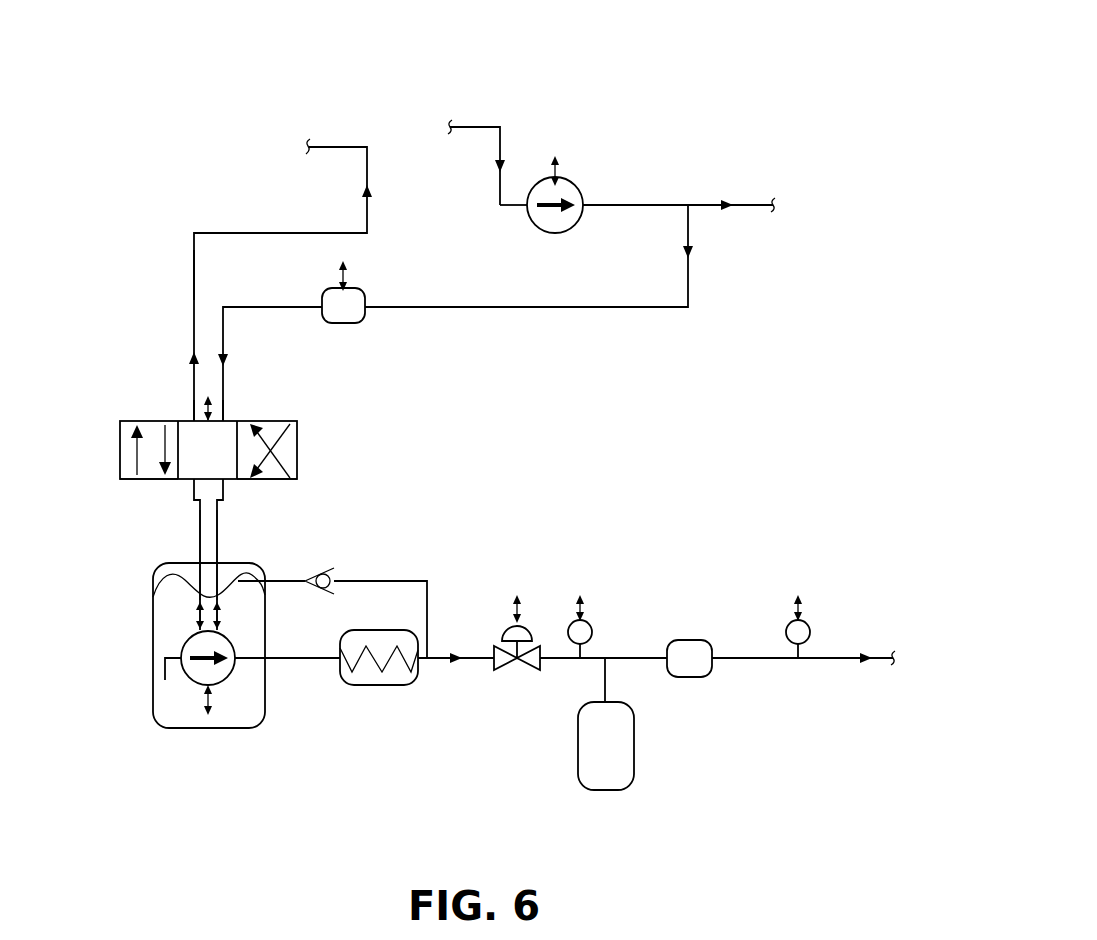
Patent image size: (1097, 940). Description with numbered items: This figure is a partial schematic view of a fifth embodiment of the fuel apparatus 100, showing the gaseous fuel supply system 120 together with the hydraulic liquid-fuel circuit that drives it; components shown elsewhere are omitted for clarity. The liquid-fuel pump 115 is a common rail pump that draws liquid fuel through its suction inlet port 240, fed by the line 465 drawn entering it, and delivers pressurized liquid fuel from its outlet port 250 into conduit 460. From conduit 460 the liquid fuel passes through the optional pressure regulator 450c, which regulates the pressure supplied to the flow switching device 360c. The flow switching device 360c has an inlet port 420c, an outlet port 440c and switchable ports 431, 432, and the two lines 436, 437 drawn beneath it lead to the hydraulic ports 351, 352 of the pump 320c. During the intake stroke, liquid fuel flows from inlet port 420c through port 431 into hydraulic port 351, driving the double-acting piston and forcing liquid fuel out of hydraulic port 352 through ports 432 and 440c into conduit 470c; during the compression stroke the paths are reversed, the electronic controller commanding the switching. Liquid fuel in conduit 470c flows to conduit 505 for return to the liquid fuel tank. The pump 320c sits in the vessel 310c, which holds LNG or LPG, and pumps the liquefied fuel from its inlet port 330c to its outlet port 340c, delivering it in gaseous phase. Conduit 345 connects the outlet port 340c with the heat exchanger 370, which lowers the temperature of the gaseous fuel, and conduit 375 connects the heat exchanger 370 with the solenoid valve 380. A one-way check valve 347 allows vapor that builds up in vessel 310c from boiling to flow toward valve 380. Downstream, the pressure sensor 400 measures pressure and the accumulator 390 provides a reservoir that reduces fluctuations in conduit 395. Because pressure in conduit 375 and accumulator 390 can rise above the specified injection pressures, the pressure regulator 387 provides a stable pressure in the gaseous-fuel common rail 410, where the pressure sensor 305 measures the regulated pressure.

The fuel apparatus 100 is at (756, 78).
The liquid-fuel pump 115 is at (568, 180).
The gaseous fuel supply system 120 is at (77, 346).
The suction inlet port 240 is at (528, 212).
The outlet port 250 is at (588, 200).
The pressure sensor 305 is at (808, 625).
The vessel 310c is at (208, 730).
The pump 320c is at (180, 680).
The inlet port 330c is at (180, 657).
The outlet port 340c is at (237, 664).
The conduit 345 is at (280, 660).
The one-way check valve 347 is at (317, 578).
The hydraulic port 351 is at (222, 640).
The hydraulic port 352 is at (198, 633).
The flow switching device 360c is at (114, 425).
The heat exchanger 370 is at (378, 686).
The conduit 375 is at (472, 660).
The solenoid valve 380 is at (525, 622).
The pressure regulator 387 is at (695, 640).
The accumulator 390 is at (578, 775).
The conduit 395 is at (648, 660).
The pressure sensor 400 is at (592, 623).
The gaseous-fuel common rail 410 is at (768, 660).
The inlet port 420c is at (226, 418).
The switchable port 431 is at (240, 482).
The switchable port 432 is at (180, 480).
The conduit 436 is at (217, 577).
The conduit 437 is at (222, 602).
The outlet port 440c is at (192, 418).
The pressure regulator 450c is at (358, 290).
The conduit 460 is at (668, 203).
The return line 465 is at (470, 126).
The conduit 470c is at (190, 265).
The conduit 505 is at (282, 232).